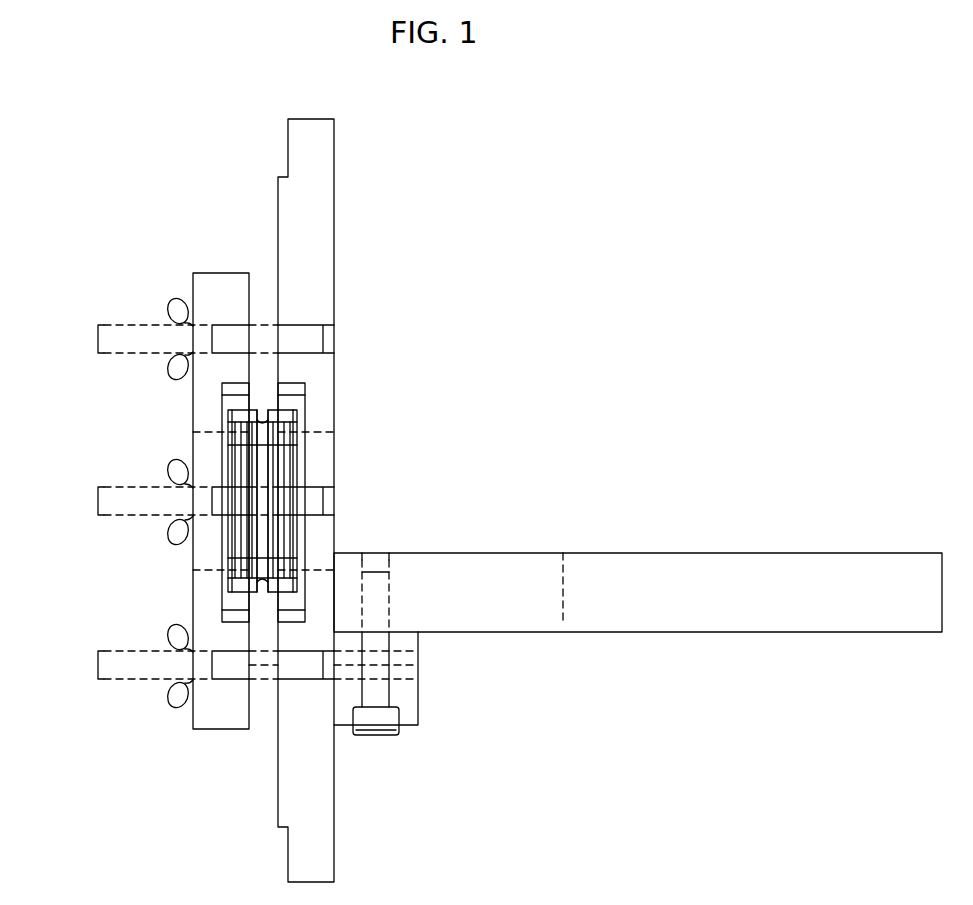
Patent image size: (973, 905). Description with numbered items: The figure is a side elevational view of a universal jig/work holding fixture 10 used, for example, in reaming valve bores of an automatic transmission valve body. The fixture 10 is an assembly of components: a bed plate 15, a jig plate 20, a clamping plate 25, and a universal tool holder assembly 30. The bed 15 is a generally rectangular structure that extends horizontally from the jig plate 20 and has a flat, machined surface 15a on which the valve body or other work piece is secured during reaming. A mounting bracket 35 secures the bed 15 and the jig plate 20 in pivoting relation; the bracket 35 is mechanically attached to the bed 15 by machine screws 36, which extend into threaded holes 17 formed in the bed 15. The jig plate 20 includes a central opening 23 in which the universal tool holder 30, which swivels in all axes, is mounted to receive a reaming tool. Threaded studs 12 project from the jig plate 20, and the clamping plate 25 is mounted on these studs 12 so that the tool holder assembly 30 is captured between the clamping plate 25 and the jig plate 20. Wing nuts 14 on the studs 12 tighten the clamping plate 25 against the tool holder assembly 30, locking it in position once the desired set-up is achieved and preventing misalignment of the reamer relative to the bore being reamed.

The universal jig/work holding fixture 10 is at (128, 176).
The threaded studs 12 is at (98, 339).
The wing nuts 14 is at (170, 302).
The bed plate 15 is at (683, 645).
The machined surface 15a is at (592, 553).
The threaded holes 17 is at (378, 555).
The jig plate 20 is at (342, 254).
The central opening 23 is at (325, 455).
The clamping plate 25 is at (210, 742).
The universal tool holder assembly 30 is at (313, 415).
The mounting bracket 35 is at (410, 705).
The machine screws 36 is at (380, 735).